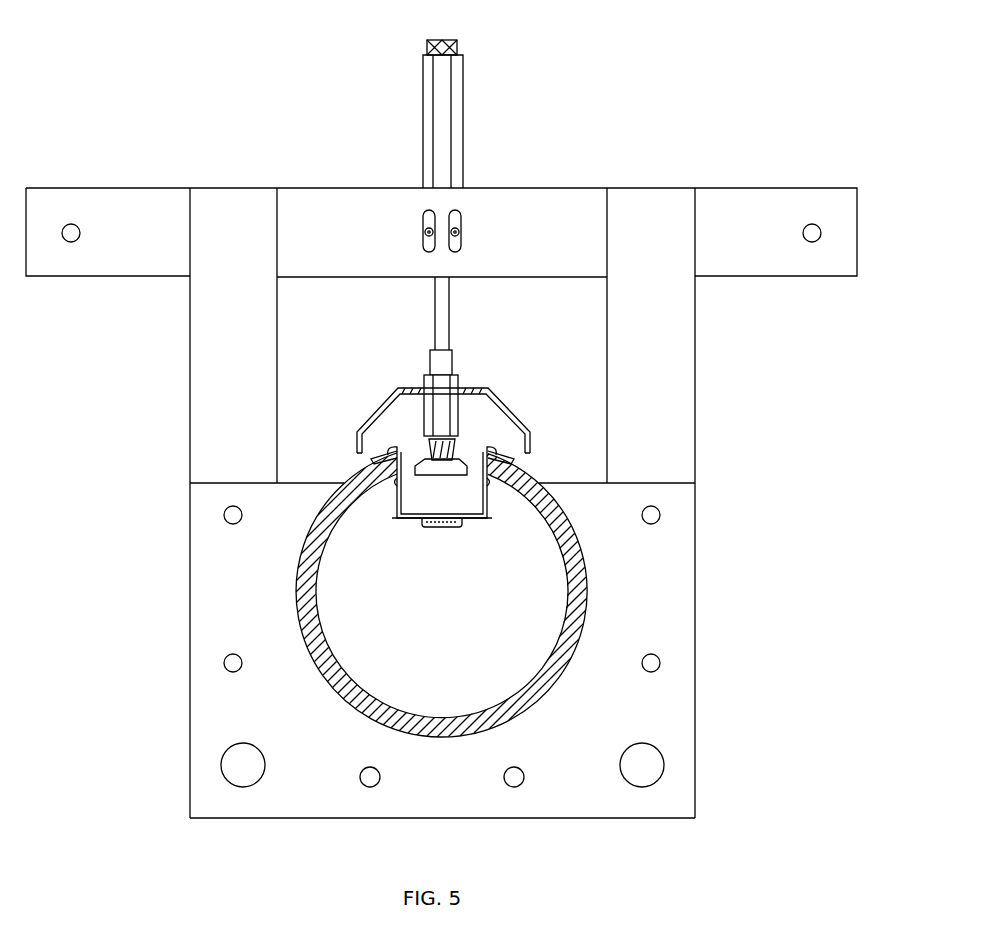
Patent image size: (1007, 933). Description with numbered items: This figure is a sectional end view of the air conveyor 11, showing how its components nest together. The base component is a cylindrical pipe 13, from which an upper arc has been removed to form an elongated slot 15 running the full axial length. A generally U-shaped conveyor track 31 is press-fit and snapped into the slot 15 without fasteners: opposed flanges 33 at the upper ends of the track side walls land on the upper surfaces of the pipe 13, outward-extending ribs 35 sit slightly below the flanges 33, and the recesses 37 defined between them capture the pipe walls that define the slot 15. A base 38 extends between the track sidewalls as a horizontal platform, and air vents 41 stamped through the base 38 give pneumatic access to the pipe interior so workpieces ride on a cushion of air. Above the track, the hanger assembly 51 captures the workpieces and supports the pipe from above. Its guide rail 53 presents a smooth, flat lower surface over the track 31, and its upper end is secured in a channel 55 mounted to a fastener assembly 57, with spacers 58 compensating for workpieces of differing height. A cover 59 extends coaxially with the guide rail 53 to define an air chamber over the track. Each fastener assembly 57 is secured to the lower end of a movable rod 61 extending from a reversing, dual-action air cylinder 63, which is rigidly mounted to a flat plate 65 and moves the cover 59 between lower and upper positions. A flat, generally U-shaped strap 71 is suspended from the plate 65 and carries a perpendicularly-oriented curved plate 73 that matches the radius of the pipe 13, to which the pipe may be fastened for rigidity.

The conveyor 11 is at (789, 159).
The pipe 13 is at (547, 660).
The slot 15 is at (362, 443).
The conveyor track 31 is at (478, 540).
The flanges 33 is at (482, 452).
The ribs 35 is at (497, 483).
The recesses 37 is at (500, 465).
The base 38 is at (398, 520).
The air vents 41 is at (441, 527).
The hanger assembly 51 is at (352, 170).
The guide rail 53 is at (432, 467).
The channel 55 is at (460, 446).
The fastener assembly 57 is at (460, 380).
The spacers 58 is at (427, 411).
The cover 59 is at (432, 412).
The movable rod 61 is at (435, 305).
The air cylinder 63 is at (463, 92).
The flat plate 65 is at (569, 188).
The strap 71 is at (682, 424).
The curved plate 73 is at (587, 609).